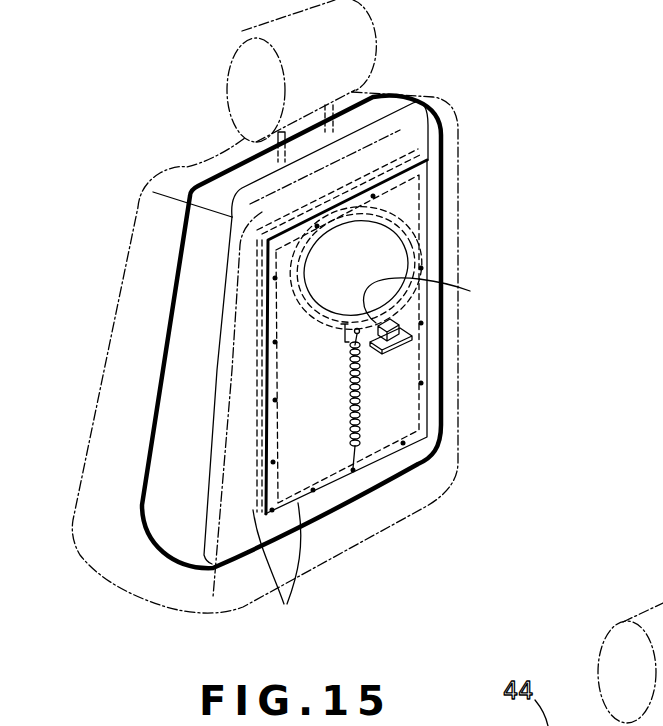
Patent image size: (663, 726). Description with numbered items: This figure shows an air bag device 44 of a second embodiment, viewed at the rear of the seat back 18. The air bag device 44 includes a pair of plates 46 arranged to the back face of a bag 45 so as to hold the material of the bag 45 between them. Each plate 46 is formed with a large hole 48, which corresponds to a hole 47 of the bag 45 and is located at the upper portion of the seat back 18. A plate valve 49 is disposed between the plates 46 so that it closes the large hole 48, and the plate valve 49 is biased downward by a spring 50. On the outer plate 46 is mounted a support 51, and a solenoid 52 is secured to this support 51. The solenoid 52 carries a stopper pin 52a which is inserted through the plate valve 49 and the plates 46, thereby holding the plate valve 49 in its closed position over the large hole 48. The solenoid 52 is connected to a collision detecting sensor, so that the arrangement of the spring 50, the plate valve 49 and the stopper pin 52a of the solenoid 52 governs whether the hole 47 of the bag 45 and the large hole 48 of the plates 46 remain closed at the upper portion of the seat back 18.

The seat back 18 is at (448, 115).
The air bag device 44 is at (183, 185).
The bag 45 is at (163, 367).
The plates 46 is at (279, 570).
The hole 47 is at (356, 267).
The large hole 48 is at (400, 214).
The plate valve 49 is at (377, 248).
The spring 50 is at (360, 430).
The support 51 is at (412, 349).
The solenoid 52 is at (399, 325).
The stopper pin 52a is at (445, 298).